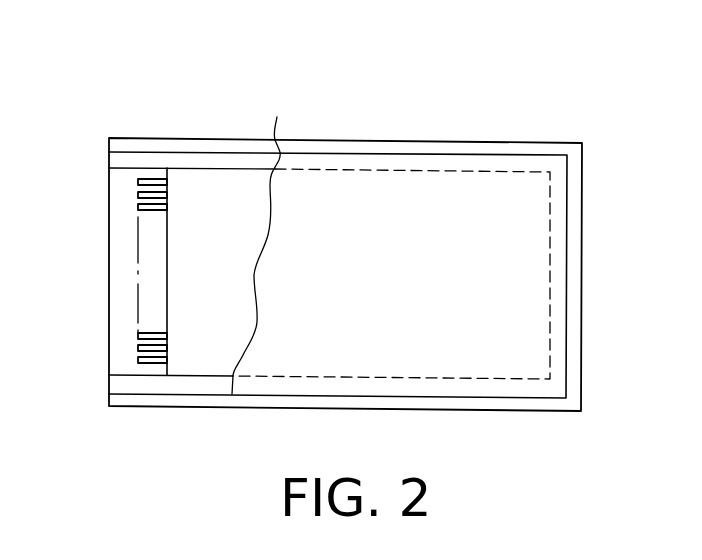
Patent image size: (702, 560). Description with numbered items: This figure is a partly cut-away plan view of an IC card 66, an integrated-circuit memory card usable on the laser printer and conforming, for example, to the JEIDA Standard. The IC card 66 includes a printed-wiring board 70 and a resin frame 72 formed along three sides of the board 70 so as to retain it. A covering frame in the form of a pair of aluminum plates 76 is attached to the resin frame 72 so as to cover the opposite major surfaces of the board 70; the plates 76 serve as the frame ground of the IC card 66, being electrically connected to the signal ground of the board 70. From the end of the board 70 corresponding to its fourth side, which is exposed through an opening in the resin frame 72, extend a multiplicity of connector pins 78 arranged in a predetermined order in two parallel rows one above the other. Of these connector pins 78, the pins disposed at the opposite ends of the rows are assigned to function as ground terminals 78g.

The IC card 66 is at (506, 115).
The printed-wiring board 70 is at (209, 365).
The resin frame 72 is at (266, 241).
The aluminum plates 76 is at (384, 363).
The connector pins 78 is at (138, 195).
The ground terminals 78g is at (155, 178).